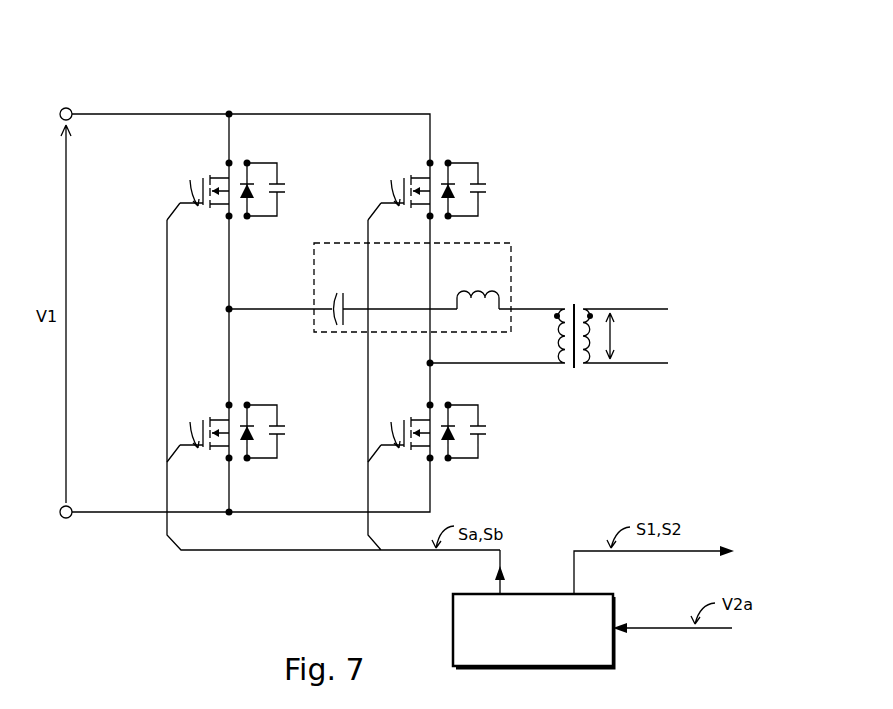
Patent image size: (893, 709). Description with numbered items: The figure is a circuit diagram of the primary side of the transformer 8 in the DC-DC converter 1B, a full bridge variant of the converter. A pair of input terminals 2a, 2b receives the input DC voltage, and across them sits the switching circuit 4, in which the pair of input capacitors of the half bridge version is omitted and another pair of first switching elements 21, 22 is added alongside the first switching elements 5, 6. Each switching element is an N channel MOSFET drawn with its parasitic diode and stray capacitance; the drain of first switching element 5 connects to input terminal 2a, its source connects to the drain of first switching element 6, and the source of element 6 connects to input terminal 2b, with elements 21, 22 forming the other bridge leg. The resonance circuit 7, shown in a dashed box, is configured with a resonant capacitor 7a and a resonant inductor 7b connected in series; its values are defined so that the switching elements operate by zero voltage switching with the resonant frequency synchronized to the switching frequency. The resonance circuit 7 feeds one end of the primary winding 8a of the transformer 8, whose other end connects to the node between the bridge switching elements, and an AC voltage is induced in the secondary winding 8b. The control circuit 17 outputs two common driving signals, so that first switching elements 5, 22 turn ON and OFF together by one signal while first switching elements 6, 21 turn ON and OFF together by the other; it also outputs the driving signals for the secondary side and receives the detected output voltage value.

The DC-DC converter 1B is at (481, 78).
The input terminal 2a is at (68, 106).
The input terminal 2b is at (68, 520).
The switching circuit 4 is at (313, 86).
The first switching element 5 is at (423, 177).
The first switching element 6 is at (423, 419).
The first switching element 21 is at (222, 177).
The first switching element 22 is at (222, 419).
The resonance circuit 7 is at (421, 274).
The resonant capacitor 7a is at (337, 293).
The resonant inductor 7b is at (467, 293).
The transformer 8 is at (603, 295).
The primary winding 8a is at (560, 306).
The secondary winding 8b is at (587, 306).
The control circuit 17 is at (594, 594).